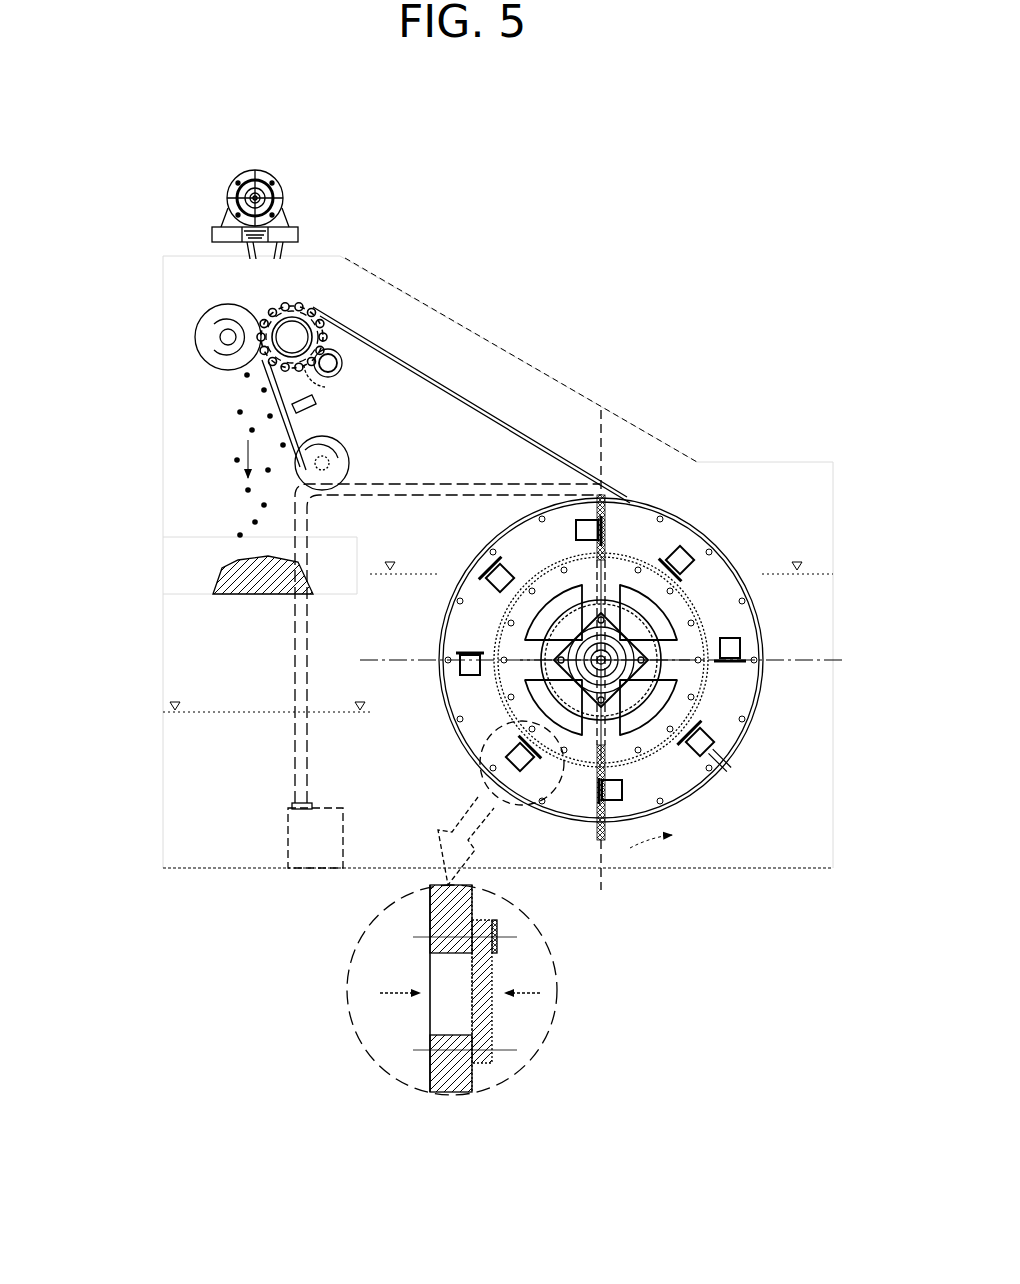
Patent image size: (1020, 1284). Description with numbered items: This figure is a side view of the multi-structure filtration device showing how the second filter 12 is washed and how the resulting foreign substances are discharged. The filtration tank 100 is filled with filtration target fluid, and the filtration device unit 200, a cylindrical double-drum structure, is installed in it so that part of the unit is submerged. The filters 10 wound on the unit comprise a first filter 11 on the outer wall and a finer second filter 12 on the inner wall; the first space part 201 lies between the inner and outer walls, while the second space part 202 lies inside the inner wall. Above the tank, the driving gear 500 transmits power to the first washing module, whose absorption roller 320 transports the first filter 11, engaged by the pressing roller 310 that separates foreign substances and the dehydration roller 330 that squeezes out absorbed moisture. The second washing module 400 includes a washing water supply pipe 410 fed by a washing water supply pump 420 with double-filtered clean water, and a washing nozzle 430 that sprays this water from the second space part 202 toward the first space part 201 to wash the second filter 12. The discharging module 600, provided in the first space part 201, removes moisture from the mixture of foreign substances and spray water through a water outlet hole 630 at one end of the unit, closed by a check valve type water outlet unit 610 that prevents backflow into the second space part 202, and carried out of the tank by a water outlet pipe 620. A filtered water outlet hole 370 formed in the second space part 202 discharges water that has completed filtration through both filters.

The filtration tank 100 is at (185, 246).
The driving gear 500 is at (238, 181).
The pressing roller 310 is at (226, 336).
The absorption roller 320 is at (306, 308).
The dehydration roller 330 is at (343, 352).
The filtration device unit 200 is at (667, 623).
The first space part 201 is at (650, 543).
The second space part 202 is at (722, 550).
The filters 10 is at (898, 570).
The first filter 11 is at (758, 637).
The second filter 12 is at (745, 597).
The filtered water outlet hole 370 is at (714, 748).
The second washing module 400 is at (308, 676).
The washing water supply pipe 410 is at (300, 740).
The washing water supply pump 420 is at (288, 812).
The washing nozzle 430 is at (578, 591).
The discharging module 600 is at (620, 806).
The check valve type water outlet unit 610 is at (720, 745).
The water outlet pipe 620 is at (710, 757).
The water outlet hole 630 is at (720, 758).